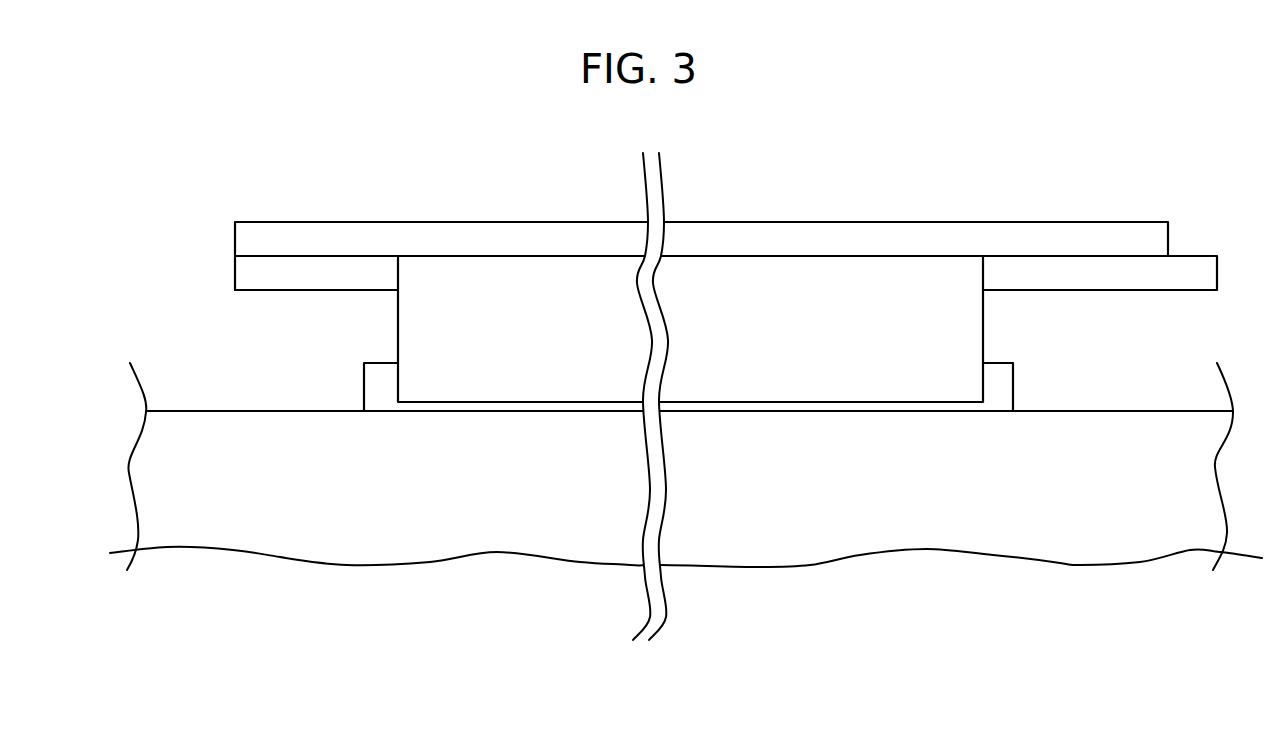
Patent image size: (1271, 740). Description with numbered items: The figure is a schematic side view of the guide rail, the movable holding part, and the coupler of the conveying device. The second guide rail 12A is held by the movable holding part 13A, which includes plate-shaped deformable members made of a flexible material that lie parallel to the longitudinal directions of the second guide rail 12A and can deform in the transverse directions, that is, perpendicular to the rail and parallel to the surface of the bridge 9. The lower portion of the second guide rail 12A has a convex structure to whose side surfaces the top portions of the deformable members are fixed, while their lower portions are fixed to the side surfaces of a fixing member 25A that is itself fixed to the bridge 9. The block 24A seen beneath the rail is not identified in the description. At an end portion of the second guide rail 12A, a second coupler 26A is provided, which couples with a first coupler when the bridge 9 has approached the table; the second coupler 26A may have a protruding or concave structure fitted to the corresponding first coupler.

The bridge 9 is at (167, 443).
The second guide rail 12A is at (1013, 237).
The second coupler 26A is at (1190, 270).
The body block 24A is at (969, 310).
The fixing member 25A is at (375, 400).
The movable holding part 13A is at (1075, 318).